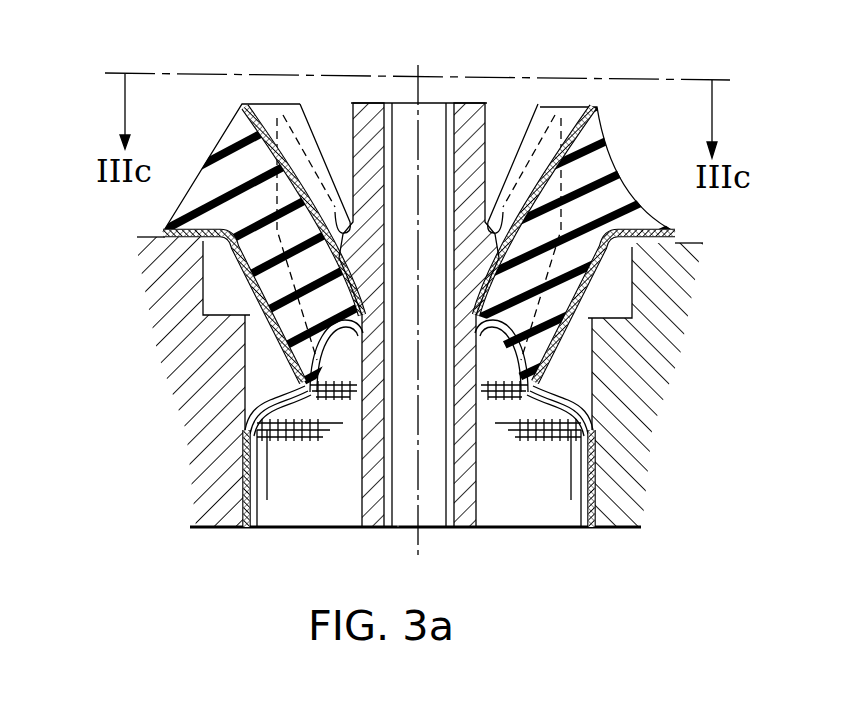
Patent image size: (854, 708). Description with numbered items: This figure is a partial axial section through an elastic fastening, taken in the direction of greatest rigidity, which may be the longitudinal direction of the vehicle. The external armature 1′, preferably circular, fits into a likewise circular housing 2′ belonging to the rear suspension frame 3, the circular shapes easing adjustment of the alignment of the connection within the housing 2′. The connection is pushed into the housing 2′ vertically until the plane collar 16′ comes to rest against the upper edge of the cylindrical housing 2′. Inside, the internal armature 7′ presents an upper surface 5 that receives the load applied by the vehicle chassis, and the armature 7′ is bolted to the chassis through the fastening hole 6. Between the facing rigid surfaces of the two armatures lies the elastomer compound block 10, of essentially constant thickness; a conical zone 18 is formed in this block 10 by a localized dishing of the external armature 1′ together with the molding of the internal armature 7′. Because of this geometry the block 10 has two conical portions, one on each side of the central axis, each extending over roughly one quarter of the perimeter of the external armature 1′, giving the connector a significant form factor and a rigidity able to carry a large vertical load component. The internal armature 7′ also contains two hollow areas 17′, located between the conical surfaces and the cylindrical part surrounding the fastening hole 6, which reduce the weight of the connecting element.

The external armature 1′ is at (243, 481).
The housing 2′ is at (235, 408).
The rear suspension frame 3 is at (170, 290).
The upper surface 5 is at (405, 95).
The fastening hole 6 is at (402, 447).
The internal armature 7′ is at (372, 115).
The elastomer compound block 10 is at (244, 165).
The plane collar 16′ is at (172, 225).
The hollow areas 17′ is at (340, 150).
The conical zone 18 is at (226, 292).